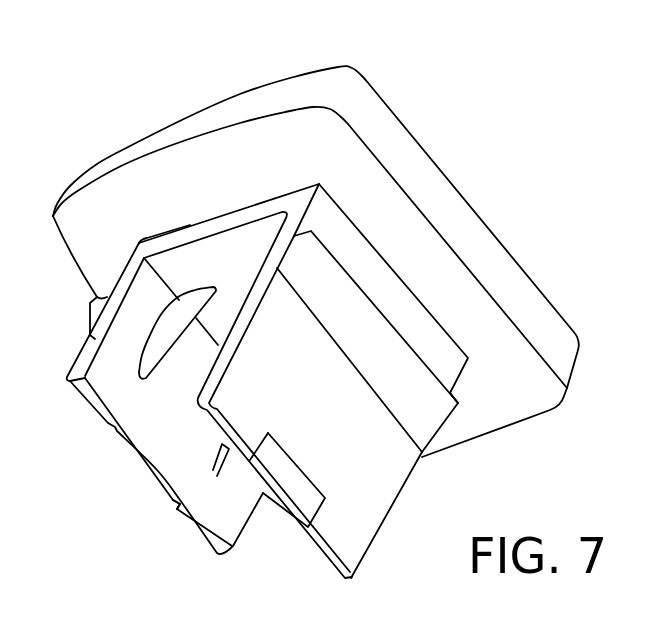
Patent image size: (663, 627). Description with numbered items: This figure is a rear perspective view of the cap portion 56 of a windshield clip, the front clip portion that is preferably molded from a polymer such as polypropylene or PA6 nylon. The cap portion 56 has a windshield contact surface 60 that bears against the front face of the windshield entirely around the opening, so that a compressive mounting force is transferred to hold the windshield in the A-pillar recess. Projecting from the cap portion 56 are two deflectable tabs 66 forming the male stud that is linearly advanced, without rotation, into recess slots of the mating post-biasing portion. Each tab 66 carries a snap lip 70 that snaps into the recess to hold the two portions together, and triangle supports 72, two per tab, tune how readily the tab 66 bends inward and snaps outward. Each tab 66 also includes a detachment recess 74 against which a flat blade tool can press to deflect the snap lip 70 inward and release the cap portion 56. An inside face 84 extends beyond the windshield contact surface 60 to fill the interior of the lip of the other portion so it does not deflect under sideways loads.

The cap portion 56 is at (438, 86).
The windshield contact surface 60 is at (212, 167).
The deflectable tab 66 is at (116, 376).
The snap lip 70 is at (100, 312).
The triangle support 72 is at (173, 318).
The detachment recess 74 is at (160, 478).
The inside face 84 is at (225, 283).